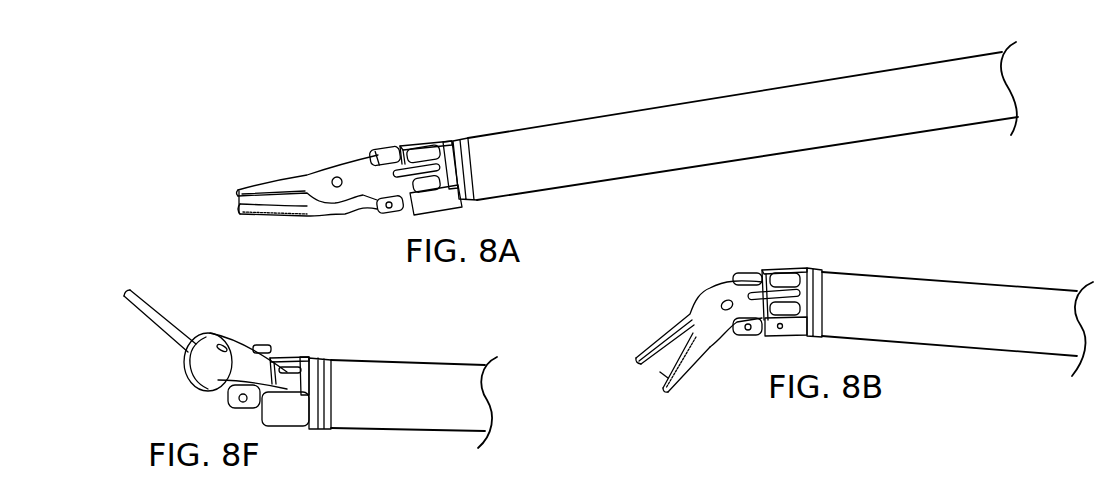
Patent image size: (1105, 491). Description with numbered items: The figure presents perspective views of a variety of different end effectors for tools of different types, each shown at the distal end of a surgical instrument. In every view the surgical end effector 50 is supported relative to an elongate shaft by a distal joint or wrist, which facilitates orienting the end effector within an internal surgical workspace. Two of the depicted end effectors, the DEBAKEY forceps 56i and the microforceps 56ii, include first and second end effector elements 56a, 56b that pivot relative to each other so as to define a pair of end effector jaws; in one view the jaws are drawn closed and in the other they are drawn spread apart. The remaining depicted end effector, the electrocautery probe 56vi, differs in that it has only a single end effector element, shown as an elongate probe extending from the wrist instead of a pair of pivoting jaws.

In FIG. 8A, the surgical end effector 50 is at (866, 91).
In FIG. 8B, the surgical end effector 50 is at (969, 299).
In FIG. 8F, the surgical end effector 50 is at (467, 389).
In FIG. 8A, the first end effector element 56a is at (265, 188).
In FIG. 8B, the first end effector element 56a is at (652, 338).
In FIG. 8A, the second end effector element 56b is at (263, 225).
In FIG. 8B, the second end effector element 56b is at (687, 378).
In FIG. 8A, the DEBAKEY forceps 56i is at (236, 201).
In FIG. 8B, the microforceps 56ii is at (653, 374).
In FIG. 8F, the electrocautery probe 56vi is at (127, 292).